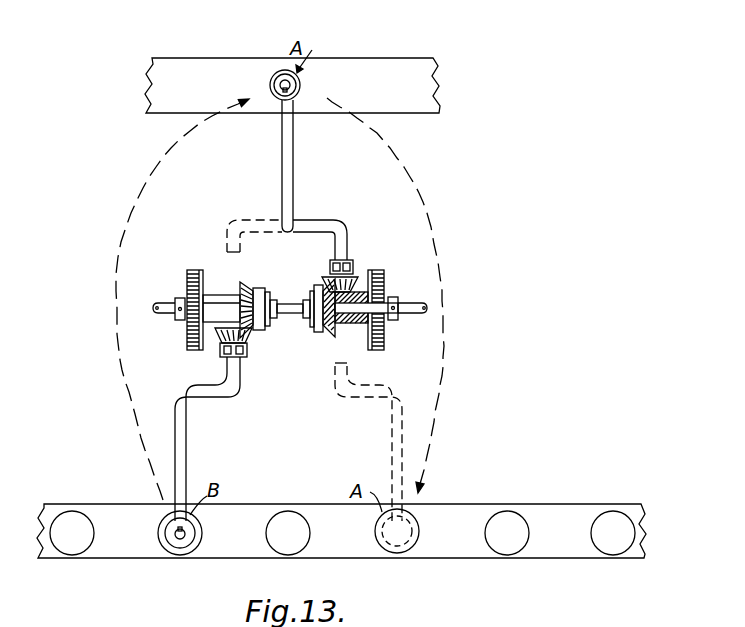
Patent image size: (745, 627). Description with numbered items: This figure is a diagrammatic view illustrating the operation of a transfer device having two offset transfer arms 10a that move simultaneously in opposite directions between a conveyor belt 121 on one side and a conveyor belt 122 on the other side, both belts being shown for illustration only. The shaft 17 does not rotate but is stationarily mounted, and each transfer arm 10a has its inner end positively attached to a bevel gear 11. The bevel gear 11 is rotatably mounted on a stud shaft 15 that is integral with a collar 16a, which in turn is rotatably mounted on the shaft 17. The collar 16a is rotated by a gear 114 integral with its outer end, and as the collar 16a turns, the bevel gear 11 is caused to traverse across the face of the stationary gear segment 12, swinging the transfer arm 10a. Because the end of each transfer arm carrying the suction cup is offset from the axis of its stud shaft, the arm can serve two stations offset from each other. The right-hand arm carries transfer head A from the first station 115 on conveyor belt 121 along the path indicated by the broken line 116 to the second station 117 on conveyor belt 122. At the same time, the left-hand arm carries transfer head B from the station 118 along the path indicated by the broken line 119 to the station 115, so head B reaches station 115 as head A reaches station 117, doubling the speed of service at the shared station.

The conveyor belt 121 is at (440, 100).
The first station 115 is at (300, 80).
The transfer arm 10a is at (293, 166).
The broken line 116 is at (440, 228).
The broken line 119 is at (134, 432).
The shaft 17 is at (172, 311).
The gear 114 is at (384, 283).
The stud shaft 15 is at (224, 322).
The collar 16a is at (243, 290).
The stationary gear segment 12 is at (318, 334).
The bevel gear 11 is at (347, 277).
The conveyor belt 122 is at (583, 487).
The first station 118 is at (172, 550).
The second station 117 is at (410, 548).